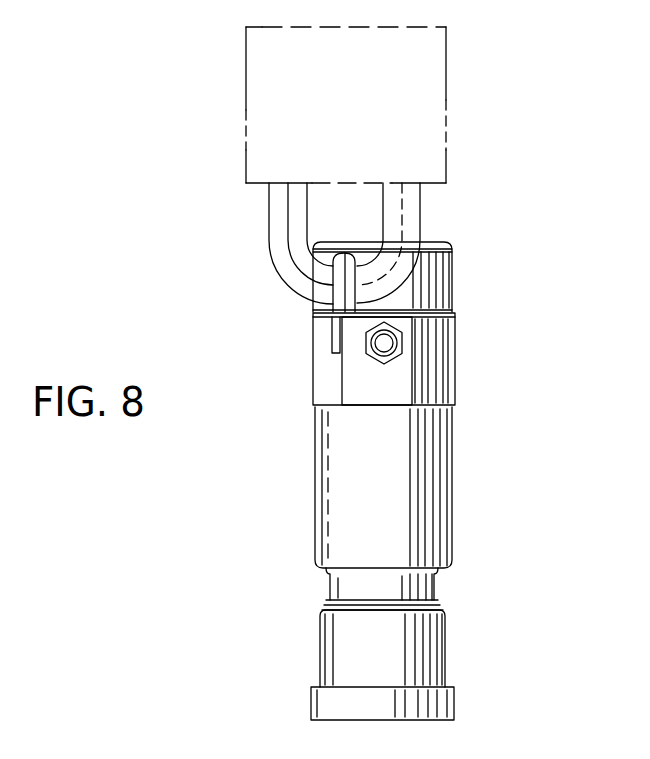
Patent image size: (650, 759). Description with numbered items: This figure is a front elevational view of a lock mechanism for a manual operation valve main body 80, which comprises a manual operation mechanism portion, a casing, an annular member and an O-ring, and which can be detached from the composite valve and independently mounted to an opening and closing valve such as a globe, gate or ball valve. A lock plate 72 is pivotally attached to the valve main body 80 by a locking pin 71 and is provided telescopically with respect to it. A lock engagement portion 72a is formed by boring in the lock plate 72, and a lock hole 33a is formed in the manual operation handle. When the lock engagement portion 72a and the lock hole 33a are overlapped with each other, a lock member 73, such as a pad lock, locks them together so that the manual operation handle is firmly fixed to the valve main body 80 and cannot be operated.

The lock member 73 is at (448, 104).
The lock plate 72 is at (330, 290).
The lock engagement portion 72a is at (330, 268).
The locking pin 71 is at (332, 330).
The lock hole 33a is at (360, 278).
The manual operation valve main body 80 is at (472, 352).